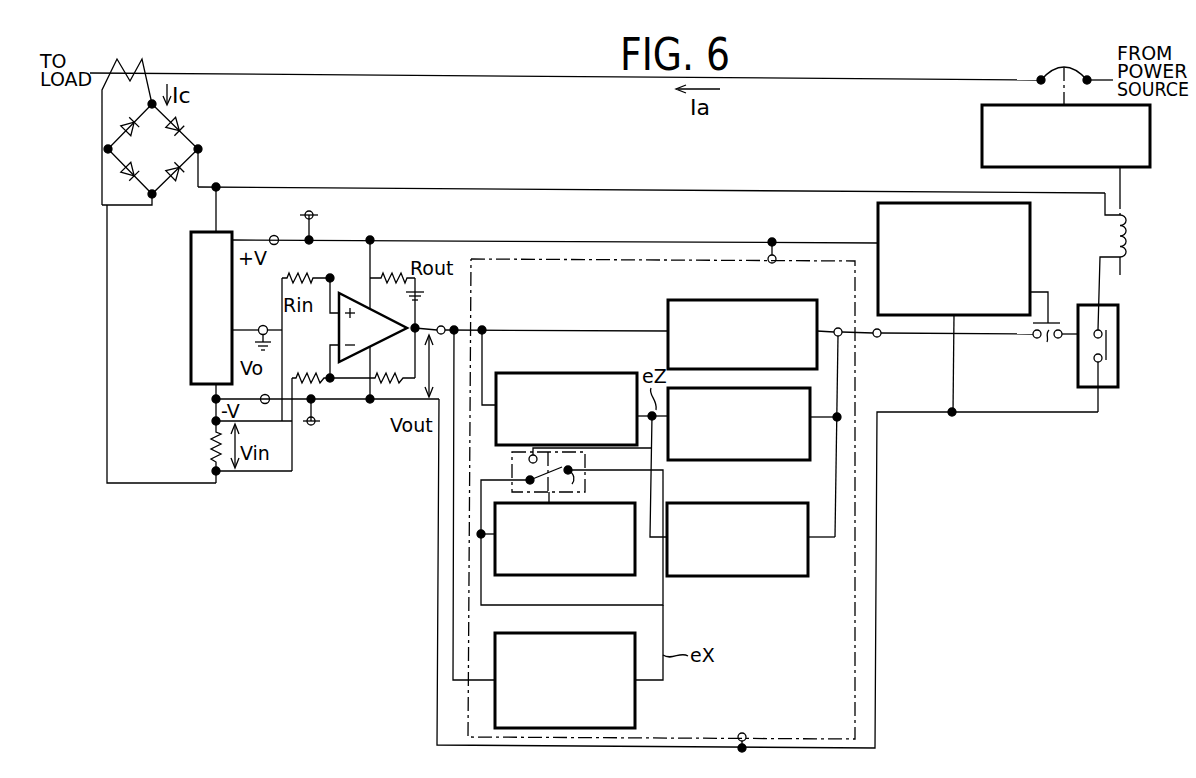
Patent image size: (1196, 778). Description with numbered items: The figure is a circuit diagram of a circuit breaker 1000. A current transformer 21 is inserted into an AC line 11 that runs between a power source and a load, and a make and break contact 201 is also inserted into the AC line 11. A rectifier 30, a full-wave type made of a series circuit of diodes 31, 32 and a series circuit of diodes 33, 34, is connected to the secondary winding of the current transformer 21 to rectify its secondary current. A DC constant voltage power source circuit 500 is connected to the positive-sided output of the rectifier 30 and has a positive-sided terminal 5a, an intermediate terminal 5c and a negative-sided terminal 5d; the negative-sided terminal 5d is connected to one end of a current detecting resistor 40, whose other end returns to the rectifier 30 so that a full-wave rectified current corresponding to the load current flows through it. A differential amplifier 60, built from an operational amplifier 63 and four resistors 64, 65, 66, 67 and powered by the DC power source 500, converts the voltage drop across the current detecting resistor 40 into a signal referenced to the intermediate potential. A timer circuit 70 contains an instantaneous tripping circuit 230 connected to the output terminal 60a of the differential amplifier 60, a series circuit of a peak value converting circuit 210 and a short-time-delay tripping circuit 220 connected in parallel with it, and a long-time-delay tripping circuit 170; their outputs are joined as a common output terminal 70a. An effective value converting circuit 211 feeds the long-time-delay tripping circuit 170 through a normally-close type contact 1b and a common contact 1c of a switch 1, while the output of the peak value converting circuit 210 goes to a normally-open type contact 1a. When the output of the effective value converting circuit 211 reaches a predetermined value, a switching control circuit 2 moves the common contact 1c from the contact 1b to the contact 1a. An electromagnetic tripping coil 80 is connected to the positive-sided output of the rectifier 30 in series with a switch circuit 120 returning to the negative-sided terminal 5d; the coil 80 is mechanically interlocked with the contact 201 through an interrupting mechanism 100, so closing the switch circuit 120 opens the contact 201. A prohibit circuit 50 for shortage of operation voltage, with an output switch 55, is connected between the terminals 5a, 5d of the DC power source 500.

The AC line 11 is at (540, 77).
The make and break contact 201 is at (1064, 67).
The interrupting mechanism 100 is at (982, 135).
The electromagnetic tripping coil 80 is at (1112, 239).
The circuit breaker 1000 is at (586, 143).
The current transformer 21 is at (146, 63).
The rectifier 30 is at (192, 108).
The diode 31 is at (130, 118).
The diode 32 is at (187, 128).
The diode 33 is at (128, 180).
The diode 34 is at (186, 172).
The DC constant voltage power source circuit 500 is at (191, 312).
The positive-sided terminal 5a is at (274, 236).
The intermediate terminal 5c is at (283, 330).
The negative-sided terminal 5d is at (266, 404).
The differential amplifier 60 is at (355, 296).
The output terminal of the differential amplifier 60a is at (447, 326).
The operational amplifier 63 is at (430, 315).
The resistor 64 is at (310, 282).
The resistor 65 is at (397, 314).
The resistor 66 is at (314, 408).
The resistor 67 is at (372, 367).
The current detecting resistor 40 is at (199, 433).
The timer circuit 70 is at (650, 259).
The common output terminal 70a is at (876, 329).
The prohibit circuit for shortage of operation voltage 50 is at (878, 222).
The instantaneous tripping circuit 230 is at (725, 300).
The peak value converting circuit 210 is at (596, 373).
The short-time-delay tripping circuit 220 is at (720, 461).
The long-time-delay tripping circuit 170 is at (760, 578).
The effective value converting circuit 211 is at (637, 705).
The switching control circuit 2 is at (603, 576).
The switch 1 is at (586, 460).
The normally-open type contact 1a is at (528, 459).
The normally-close type contact 1b is at (527, 480).
The common contact 1c is at (584, 488).
The output switch 55 is at (1048, 342).
The switch circuit 120 is at (1115, 388).